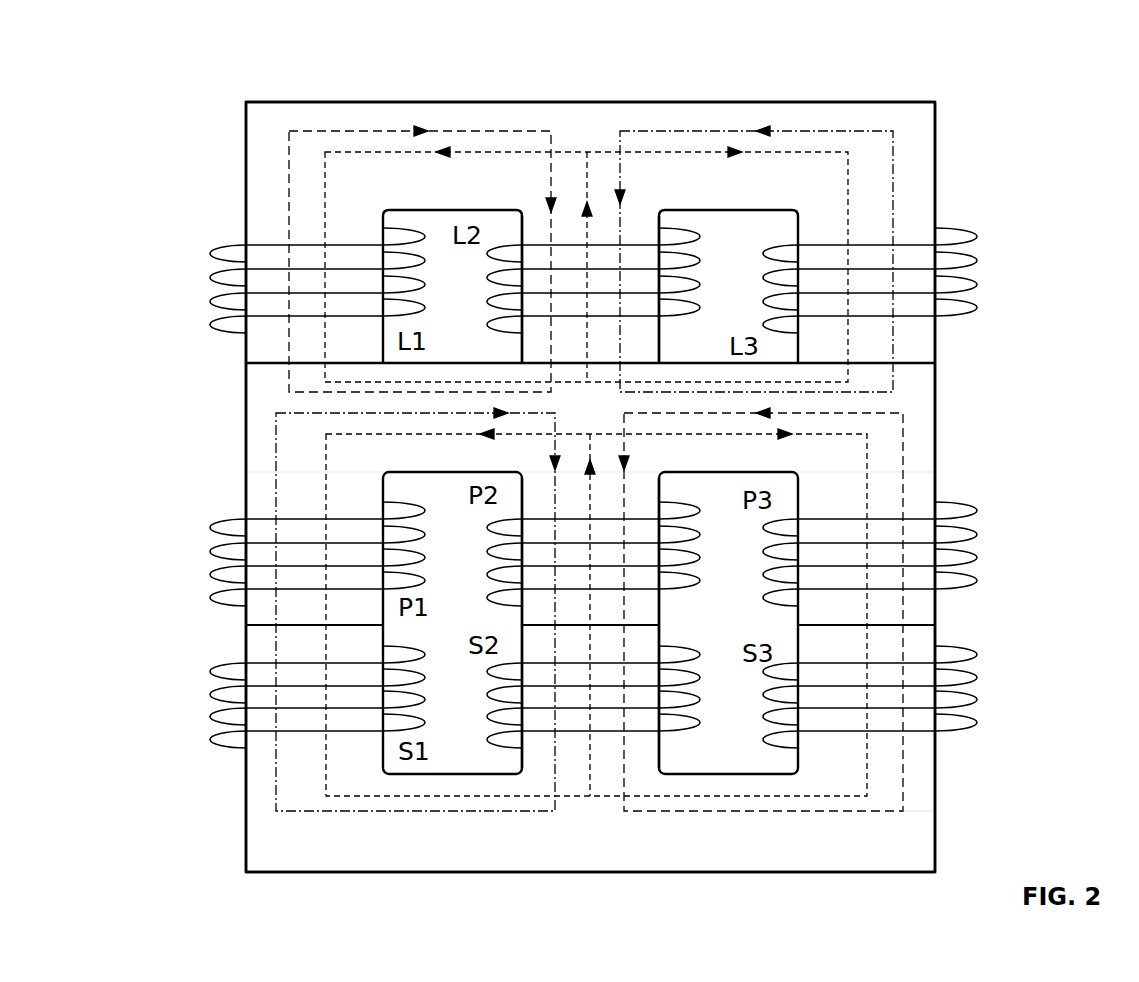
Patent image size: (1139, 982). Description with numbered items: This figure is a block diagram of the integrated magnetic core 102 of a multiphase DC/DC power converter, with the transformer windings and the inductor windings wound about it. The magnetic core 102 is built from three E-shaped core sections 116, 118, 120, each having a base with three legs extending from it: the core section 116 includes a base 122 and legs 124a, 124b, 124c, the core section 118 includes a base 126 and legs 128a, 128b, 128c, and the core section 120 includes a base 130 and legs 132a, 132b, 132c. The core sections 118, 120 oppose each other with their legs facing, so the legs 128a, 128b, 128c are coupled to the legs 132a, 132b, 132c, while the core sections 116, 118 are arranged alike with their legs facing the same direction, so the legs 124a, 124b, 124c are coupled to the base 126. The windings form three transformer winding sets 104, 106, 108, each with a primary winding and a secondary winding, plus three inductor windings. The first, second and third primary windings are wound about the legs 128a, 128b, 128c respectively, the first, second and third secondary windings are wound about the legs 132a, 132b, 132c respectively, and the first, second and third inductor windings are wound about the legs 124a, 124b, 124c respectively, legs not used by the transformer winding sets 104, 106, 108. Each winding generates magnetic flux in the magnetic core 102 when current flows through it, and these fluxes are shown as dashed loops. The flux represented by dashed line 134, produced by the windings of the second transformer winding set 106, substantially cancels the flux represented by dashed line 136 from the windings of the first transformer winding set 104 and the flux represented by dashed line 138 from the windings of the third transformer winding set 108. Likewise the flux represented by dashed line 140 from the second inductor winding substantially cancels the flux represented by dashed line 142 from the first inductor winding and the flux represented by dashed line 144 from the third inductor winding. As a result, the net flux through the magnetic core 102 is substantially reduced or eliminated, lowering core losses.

The magnetic core 102 is at (252, 50).
The transformer winding set 104 is at (222, 626).
The transformer winding set 106 is at (670, 624).
The transformer winding set 108 is at (948, 624).
The core section 116 is at (948, 178).
The core section 118 is at (948, 452).
The core section 120 is at (948, 795).
The base 122 is at (600, 113).
The leg 124a is at (262, 214).
The leg 124b is at (640, 218).
The leg 124c is at (918, 220).
The base 126 is at (610, 426).
The leg 128a is at (262, 505).
The leg 128b is at (538, 488).
The leg 128c is at (920, 496).
The base 130 is at (600, 860).
The leg 132a is at (262, 763).
The leg 132b is at (615, 790).
The leg 132c is at (920, 763).
The dashed line 134 is at (332, 477).
The dashed line 136 is at (276, 436).
The dashed line 138 is at (913, 428).
The dashed line 140 is at (516, 154).
The dashed line 142 is at (352, 131).
The dashed line 144 is at (700, 131).